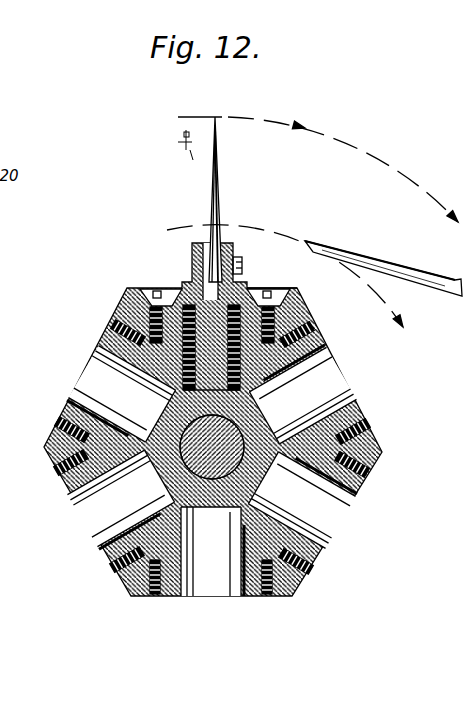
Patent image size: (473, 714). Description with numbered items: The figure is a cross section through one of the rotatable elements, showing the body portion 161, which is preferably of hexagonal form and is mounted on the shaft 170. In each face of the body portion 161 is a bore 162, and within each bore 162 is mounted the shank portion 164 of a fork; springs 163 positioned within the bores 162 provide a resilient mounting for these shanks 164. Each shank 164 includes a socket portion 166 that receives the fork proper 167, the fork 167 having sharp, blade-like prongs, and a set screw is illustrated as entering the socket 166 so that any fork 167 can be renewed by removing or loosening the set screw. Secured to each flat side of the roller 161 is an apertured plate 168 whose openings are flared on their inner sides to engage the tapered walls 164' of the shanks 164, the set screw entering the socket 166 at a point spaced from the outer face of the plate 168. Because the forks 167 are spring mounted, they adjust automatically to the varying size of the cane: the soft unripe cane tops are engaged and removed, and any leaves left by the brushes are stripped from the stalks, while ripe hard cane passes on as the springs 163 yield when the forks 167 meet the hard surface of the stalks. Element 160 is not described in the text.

The knife blade 160 is at (389, 261).
The body portion 161 is at (360, 412).
The bores 162 is at (150, 336).
The springs 163 is at (148, 330).
The shank portions 164 is at (136, 279).
The tapered walls 164' is at (266, 280).
The socket portion 166 is at (243, 240).
The forks 167 is at (219, 198).
The apertured plate 168 is at (298, 292).
The shaft 170 is at (180, 465).